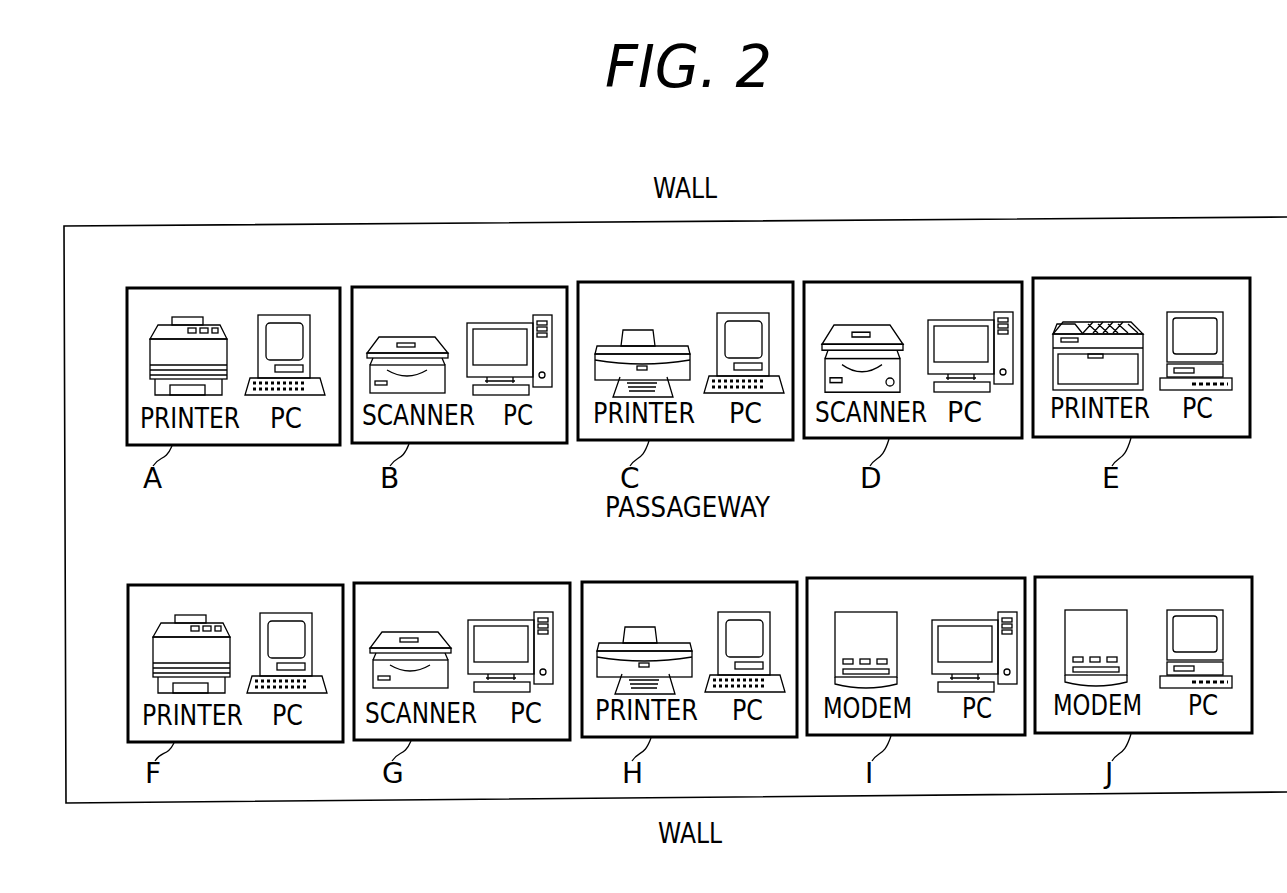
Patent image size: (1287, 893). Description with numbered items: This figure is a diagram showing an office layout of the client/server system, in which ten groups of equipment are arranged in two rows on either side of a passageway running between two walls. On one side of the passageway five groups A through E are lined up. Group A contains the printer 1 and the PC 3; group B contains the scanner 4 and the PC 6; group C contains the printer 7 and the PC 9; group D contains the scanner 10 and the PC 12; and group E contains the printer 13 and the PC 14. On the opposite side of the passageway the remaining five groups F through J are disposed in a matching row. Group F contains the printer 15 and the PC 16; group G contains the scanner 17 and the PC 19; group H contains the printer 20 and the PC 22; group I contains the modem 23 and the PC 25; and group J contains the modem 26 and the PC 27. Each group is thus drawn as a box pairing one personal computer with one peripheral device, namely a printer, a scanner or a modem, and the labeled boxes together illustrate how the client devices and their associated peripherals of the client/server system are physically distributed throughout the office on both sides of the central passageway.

The printer 1 is at (172, 317).
The PC 3 is at (308, 315).
The scanner 4 is at (383, 337).
The PC 6 is at (510, 323).
The printer 7 is at (632, 330).
The PC 9 is at (762, 313).
The scanner 10 is at (847, 325).
The PC 12 is at (975, 320).
The printer 13 is at (1072, 322).
The PC 14 is at (1205, 312).
The printer 15 is at (172, 615).
The PC 16 is at (308, 613).
The scanner 17 is at (387, 632).
The PC 19 is at (482, 620).
The printer 20 is at (633, 627).
The PC 22 is at (763, 612).
The modem 23 is at (858, 612).
The PC 25 is at (982, 620).
The modem 26 is at (1072, 610).
The PC 27 is at (1177, 610).